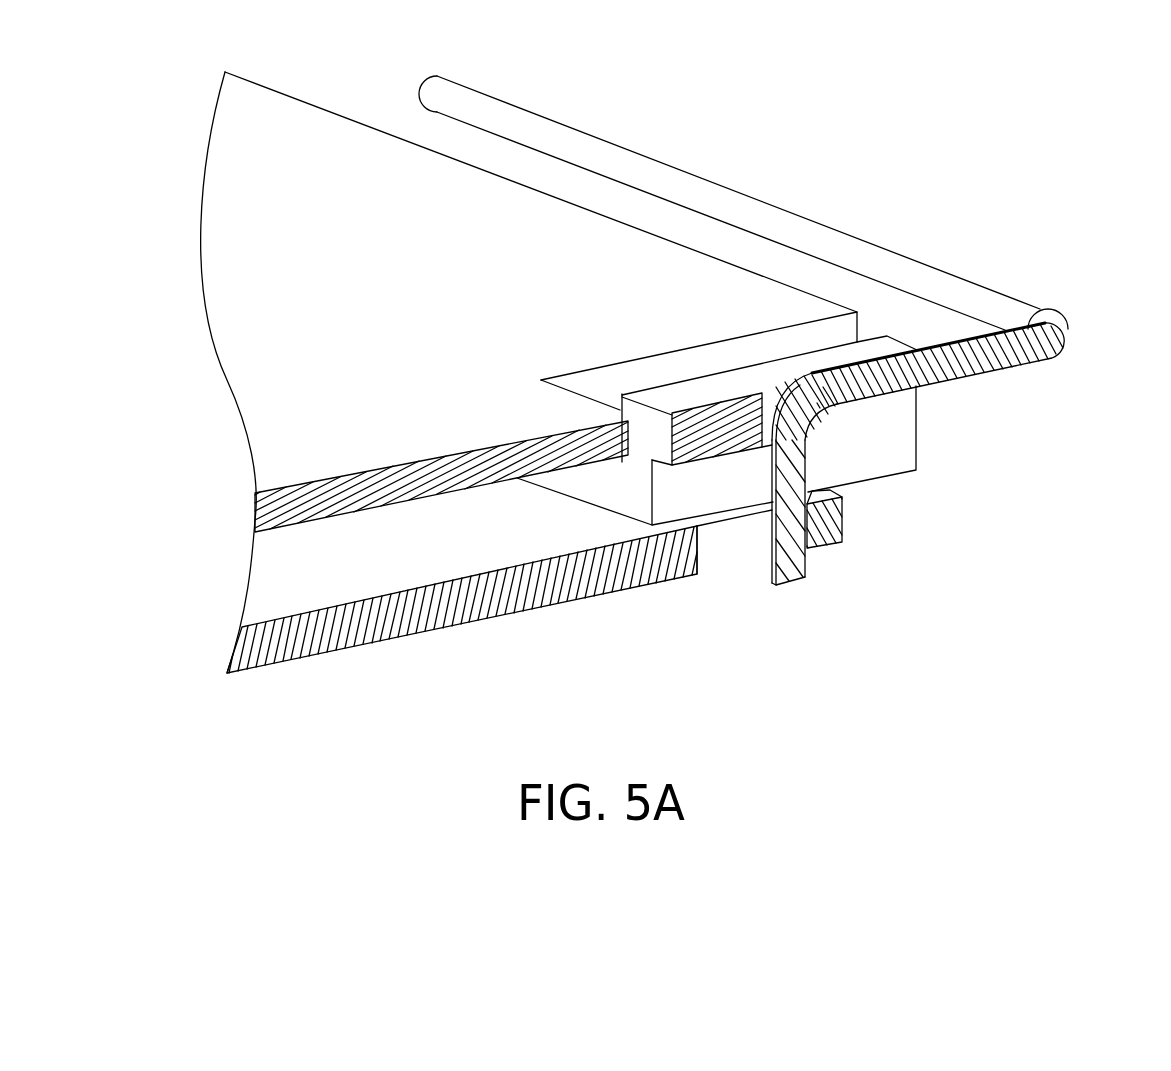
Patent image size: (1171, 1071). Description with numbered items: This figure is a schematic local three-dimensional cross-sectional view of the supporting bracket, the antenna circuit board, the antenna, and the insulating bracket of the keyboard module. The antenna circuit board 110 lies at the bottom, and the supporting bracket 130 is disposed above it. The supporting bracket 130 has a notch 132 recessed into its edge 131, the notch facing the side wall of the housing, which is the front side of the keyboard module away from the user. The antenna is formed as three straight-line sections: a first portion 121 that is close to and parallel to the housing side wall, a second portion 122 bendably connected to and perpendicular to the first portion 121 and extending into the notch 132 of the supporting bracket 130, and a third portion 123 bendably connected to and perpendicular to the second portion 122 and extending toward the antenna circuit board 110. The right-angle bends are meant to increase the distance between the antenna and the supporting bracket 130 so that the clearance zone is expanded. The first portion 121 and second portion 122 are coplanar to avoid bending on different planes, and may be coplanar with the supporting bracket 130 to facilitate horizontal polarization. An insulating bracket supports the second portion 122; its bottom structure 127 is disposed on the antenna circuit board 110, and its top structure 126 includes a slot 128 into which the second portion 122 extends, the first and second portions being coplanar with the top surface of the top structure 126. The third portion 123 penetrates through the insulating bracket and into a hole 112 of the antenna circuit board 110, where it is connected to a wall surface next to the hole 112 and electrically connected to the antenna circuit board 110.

The antenna circuit board 110 is at (842, 520).
The hole 112 is at (708, 539).
The first portion 121 is at (865, 262).
The second portion 122 is at (990, 358).
The third portion 123 is at (793, 567).
The top structure 126 is at (717, 430).
The bottom structure 127 is at (620, 483).
The slot 128 is at (768, 403).
The supporting bracket 130 is at (670, 270).
The edge 131 is at (533, 187).
The notch 132 is at (573, 390).